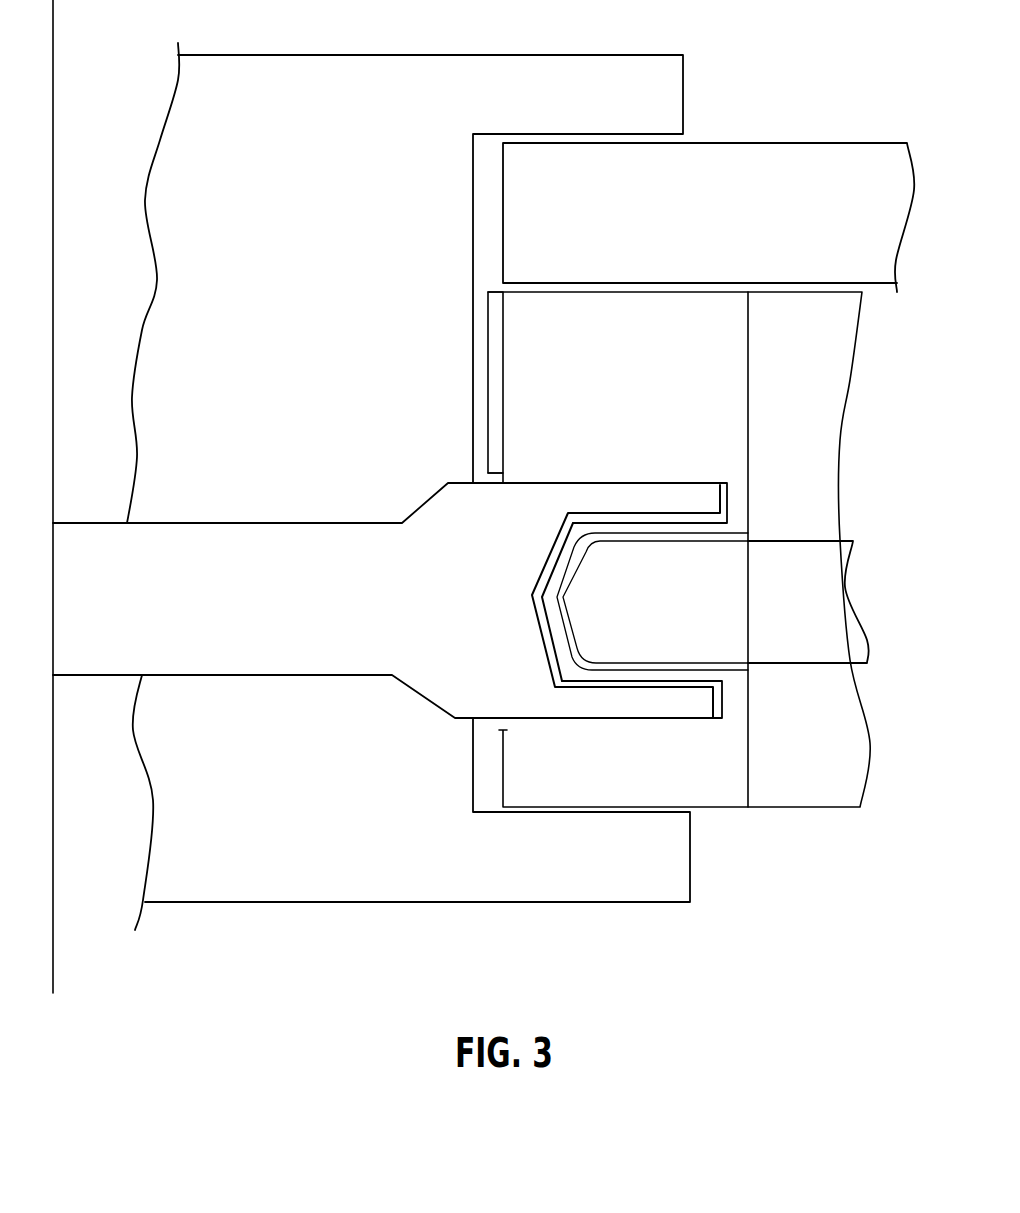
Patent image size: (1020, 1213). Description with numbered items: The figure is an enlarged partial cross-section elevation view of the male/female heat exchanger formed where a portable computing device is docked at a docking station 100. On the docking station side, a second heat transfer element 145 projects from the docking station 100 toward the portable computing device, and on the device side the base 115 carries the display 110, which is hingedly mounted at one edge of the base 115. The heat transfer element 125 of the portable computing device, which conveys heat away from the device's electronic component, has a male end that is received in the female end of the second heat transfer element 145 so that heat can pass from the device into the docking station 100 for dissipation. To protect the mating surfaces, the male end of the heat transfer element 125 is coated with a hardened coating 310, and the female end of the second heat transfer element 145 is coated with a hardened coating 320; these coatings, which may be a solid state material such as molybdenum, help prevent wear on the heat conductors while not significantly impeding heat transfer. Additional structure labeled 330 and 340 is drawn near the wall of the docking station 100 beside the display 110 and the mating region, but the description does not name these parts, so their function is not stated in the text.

The docking station 100 is at (473, 910).
The display 110 is at (815, 137).
The base 115 is at (747, 820).
The heat transfer element 125 is at (855, 583).
The second heat transfer element 145 is at (243, 515).
The hardened coating 310 is at (570, 637).
The hardened coating 320 is at (548, 632).
The guide member 330 is at (497, 378).
The guide slot 340 is at (498, 478).